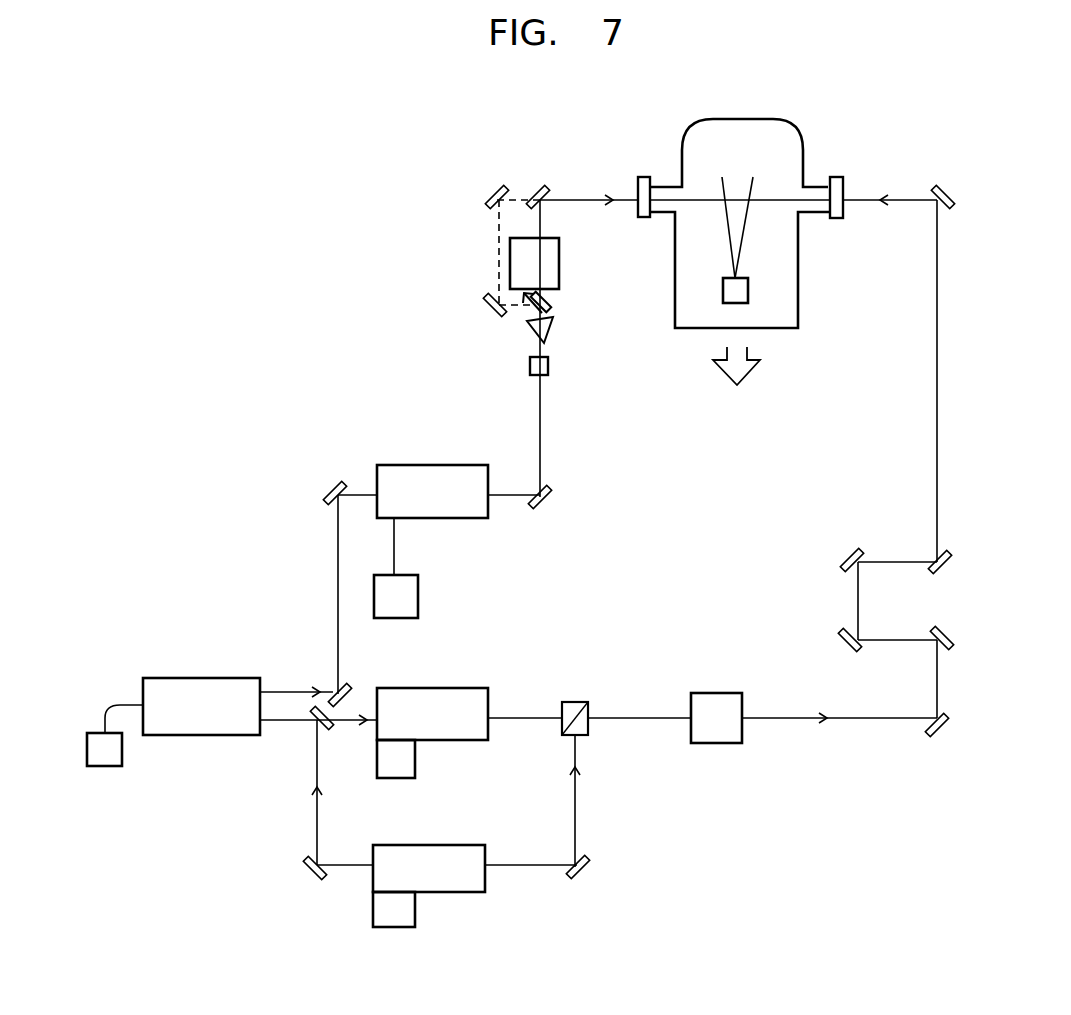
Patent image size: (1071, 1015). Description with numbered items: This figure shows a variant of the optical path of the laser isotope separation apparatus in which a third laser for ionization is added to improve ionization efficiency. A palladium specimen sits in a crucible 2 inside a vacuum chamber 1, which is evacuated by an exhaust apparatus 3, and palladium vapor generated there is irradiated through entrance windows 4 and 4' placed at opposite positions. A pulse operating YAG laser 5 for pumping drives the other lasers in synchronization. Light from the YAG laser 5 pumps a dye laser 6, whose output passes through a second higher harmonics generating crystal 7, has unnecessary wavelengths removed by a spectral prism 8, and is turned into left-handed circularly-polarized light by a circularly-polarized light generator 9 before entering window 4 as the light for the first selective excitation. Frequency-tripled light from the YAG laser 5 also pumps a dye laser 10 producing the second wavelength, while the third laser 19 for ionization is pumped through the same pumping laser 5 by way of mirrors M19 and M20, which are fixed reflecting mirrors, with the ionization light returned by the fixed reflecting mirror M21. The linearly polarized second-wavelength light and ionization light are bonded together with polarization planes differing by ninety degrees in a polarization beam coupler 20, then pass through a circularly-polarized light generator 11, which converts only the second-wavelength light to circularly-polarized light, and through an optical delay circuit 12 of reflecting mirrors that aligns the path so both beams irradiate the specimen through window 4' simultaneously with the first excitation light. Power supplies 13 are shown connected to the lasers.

The vacuum chamber 1 is at (790, 132).
The crucible 2 is at (748, 290).
The exhaust apparatus 3 is at (745, 357).
The entrance window 4 is at (651, 170).
The entrance window 4' is at (865, 178).
The YAG laser 5 is at (220, 678).
The dye laser 6 is at (470, 465).
The second higher harmonics generating crystal 7 is at (548, 366).
The spectral prism 8 is at (553, 320).
The circularly-polarized light generator 9 is at (559, 250).
The dye laser 10 is at (488, 688).
The circularly-polarized light generator 11 is at (723, 693).
The optical delay circuit 12 is at (888, 550).
The power supply 13 is at (418, 598).
The third laser 19 is at (485, 885).
The polarization beam coupler 20 is at (575, 700).
The mirror M19 is at (332, 730).
The fixed reflecting mirror M20 is at (323, 882).
The fixed reflecting mirror M21 is at (587, 867).